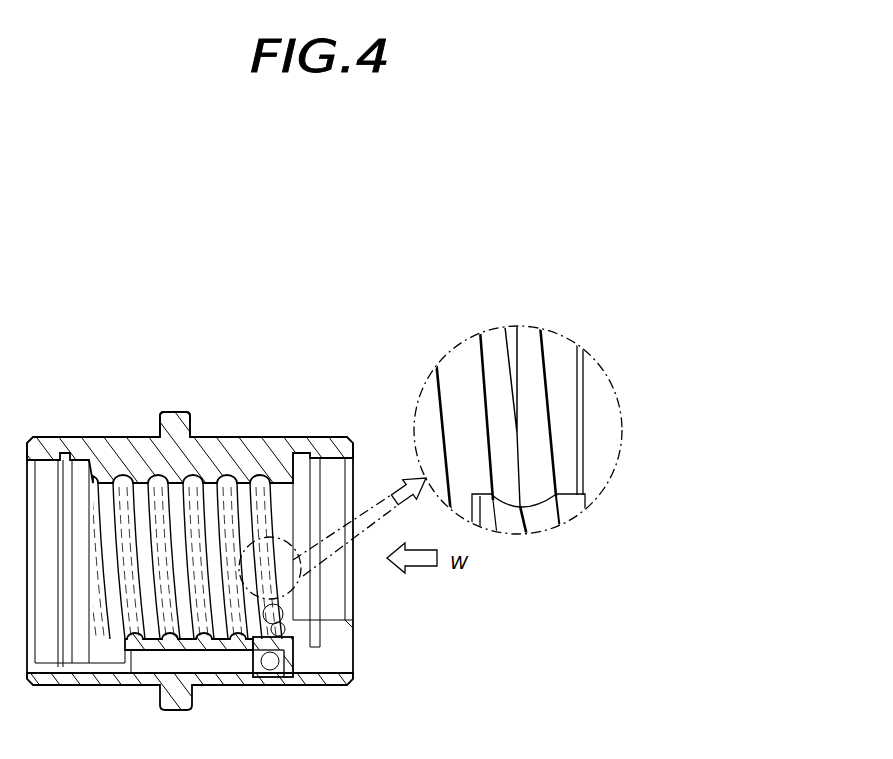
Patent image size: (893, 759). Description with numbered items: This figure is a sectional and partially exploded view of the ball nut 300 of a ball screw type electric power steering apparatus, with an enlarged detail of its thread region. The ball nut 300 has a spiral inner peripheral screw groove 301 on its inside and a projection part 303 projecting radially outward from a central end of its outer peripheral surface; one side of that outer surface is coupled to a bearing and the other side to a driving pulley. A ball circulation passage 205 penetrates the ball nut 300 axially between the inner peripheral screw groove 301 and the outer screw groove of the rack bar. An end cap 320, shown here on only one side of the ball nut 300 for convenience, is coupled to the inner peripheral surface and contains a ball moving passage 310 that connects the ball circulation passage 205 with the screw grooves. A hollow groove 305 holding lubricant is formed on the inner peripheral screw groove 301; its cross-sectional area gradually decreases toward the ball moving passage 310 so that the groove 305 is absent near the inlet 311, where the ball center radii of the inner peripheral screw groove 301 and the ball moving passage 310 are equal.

The ball nut 300 is at (340, 410).
The inner peripheral screw groove 301 is at (220, 438).
The projection part 303 is at (177, 418).
The groove 305 is at (258, 488).
The ball moving passage 310 is at (507, 530).
The inlet 311 is at (538, 507).
The ball circulation passage 205 is at (163, 668).
The end cap 320 is at (277, 677).